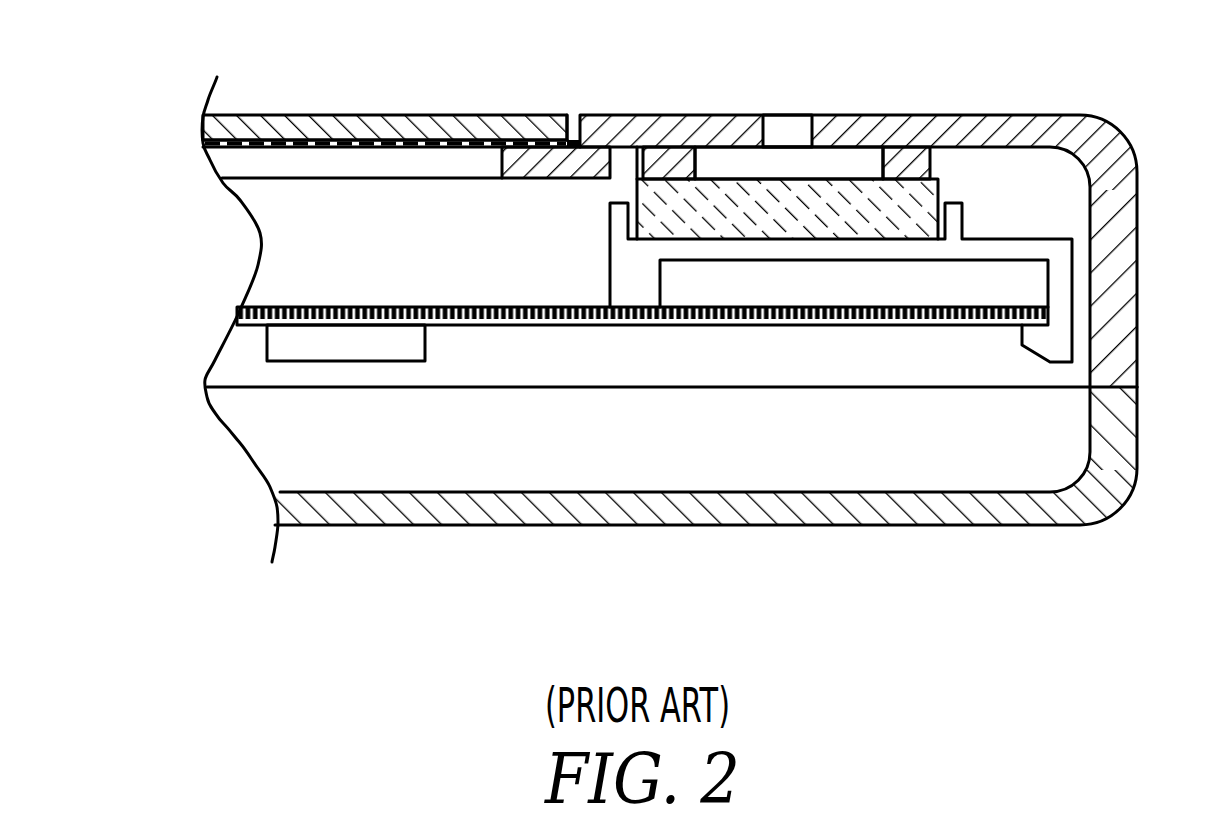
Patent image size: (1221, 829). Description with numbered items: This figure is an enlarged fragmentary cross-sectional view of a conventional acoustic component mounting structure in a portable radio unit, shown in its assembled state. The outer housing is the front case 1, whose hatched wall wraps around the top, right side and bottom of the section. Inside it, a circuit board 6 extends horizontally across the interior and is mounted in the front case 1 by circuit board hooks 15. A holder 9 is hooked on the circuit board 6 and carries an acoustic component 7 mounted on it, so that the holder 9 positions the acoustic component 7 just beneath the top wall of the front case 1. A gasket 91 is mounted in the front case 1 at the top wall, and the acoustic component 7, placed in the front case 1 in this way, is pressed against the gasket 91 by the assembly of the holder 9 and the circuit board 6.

The front case 1 is at (1130, 150).
The circuit board 6 is at (315, 303).
The acoustic component 7 is at (940, 188).
The holder 9 is at (1057, 293).
The circuit board hook 15 is at (282, 350).
The gasket 91 is at (667, 148).